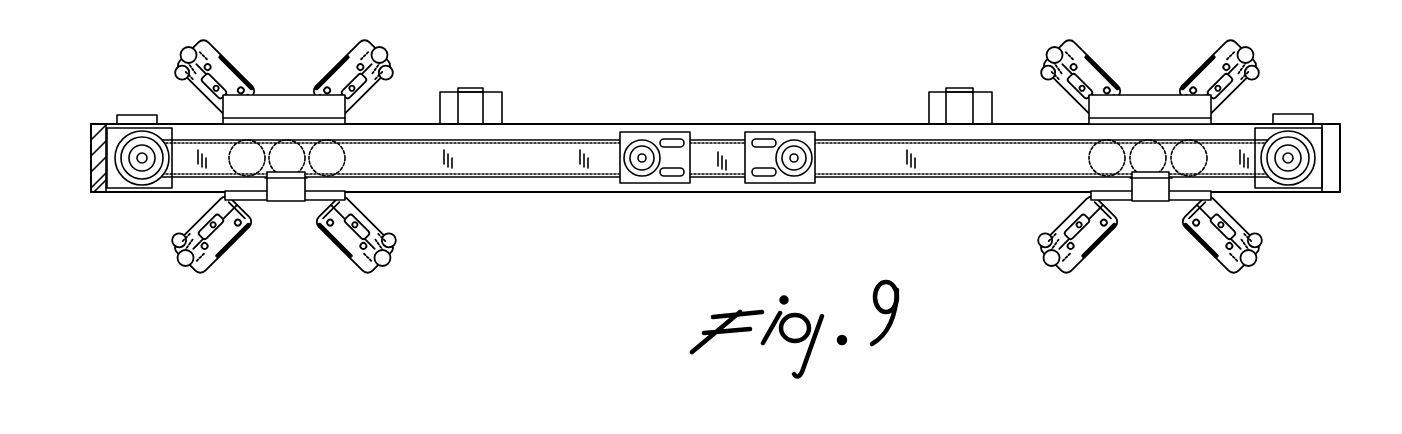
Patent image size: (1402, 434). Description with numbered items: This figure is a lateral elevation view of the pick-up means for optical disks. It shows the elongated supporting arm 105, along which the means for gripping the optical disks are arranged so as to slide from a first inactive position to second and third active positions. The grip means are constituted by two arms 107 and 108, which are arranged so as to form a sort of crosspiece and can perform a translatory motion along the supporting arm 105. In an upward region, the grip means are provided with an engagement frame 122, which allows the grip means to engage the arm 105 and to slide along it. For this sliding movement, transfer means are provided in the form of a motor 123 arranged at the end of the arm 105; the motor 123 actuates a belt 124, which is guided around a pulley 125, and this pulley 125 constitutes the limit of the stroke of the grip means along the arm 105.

The arm 105 is at (718, 174).
The arm 107 is at (390, 97).
The arm 108 is at (232, 67).
The engagement frame 122 is at (292, 192).
The motor 123 is at (137, 139).
The belt 124 is at (556, 139).
The pulley 125 is at (645, 141).